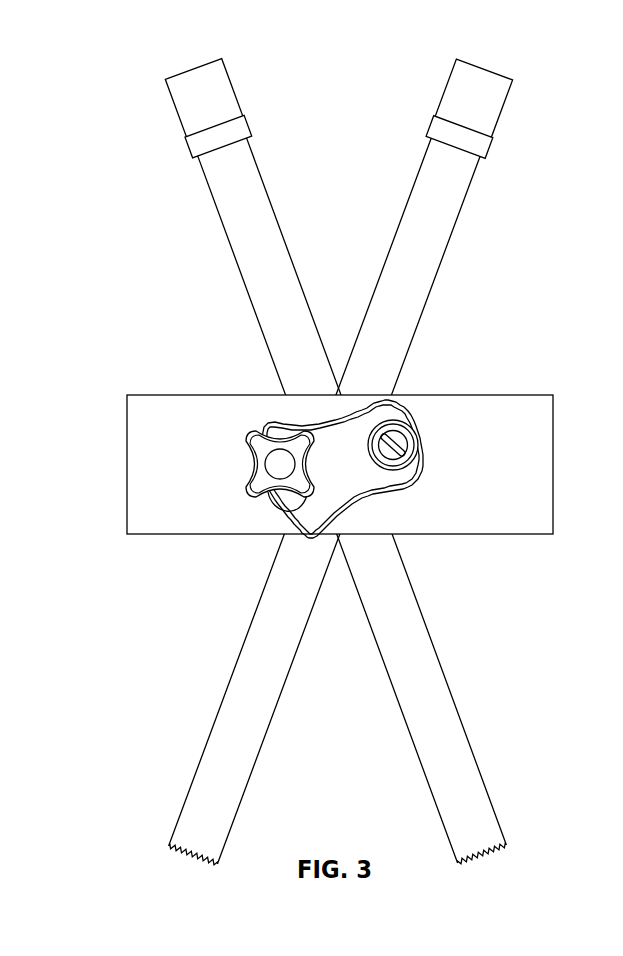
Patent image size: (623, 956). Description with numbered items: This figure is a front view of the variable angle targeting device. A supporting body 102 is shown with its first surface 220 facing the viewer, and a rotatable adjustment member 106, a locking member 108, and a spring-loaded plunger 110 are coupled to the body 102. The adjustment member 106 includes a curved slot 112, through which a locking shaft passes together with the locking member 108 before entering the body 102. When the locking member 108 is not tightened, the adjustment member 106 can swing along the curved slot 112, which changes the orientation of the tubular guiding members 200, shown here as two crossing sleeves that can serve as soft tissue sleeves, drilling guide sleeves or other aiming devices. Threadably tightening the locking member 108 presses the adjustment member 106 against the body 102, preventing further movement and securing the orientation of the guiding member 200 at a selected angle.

The tubular guiding member 200 is at (252, 188).
The supporting body 102 is at (542, 413).
The rotatable adjustment member 106 is at (370, 483).
The locking member 108 is at (278, 457).
The spring-loaded plunger 110 is at (403, 445).
The curved slot 112 is at (290, 507).
The first surface 220 is at (513, 499).